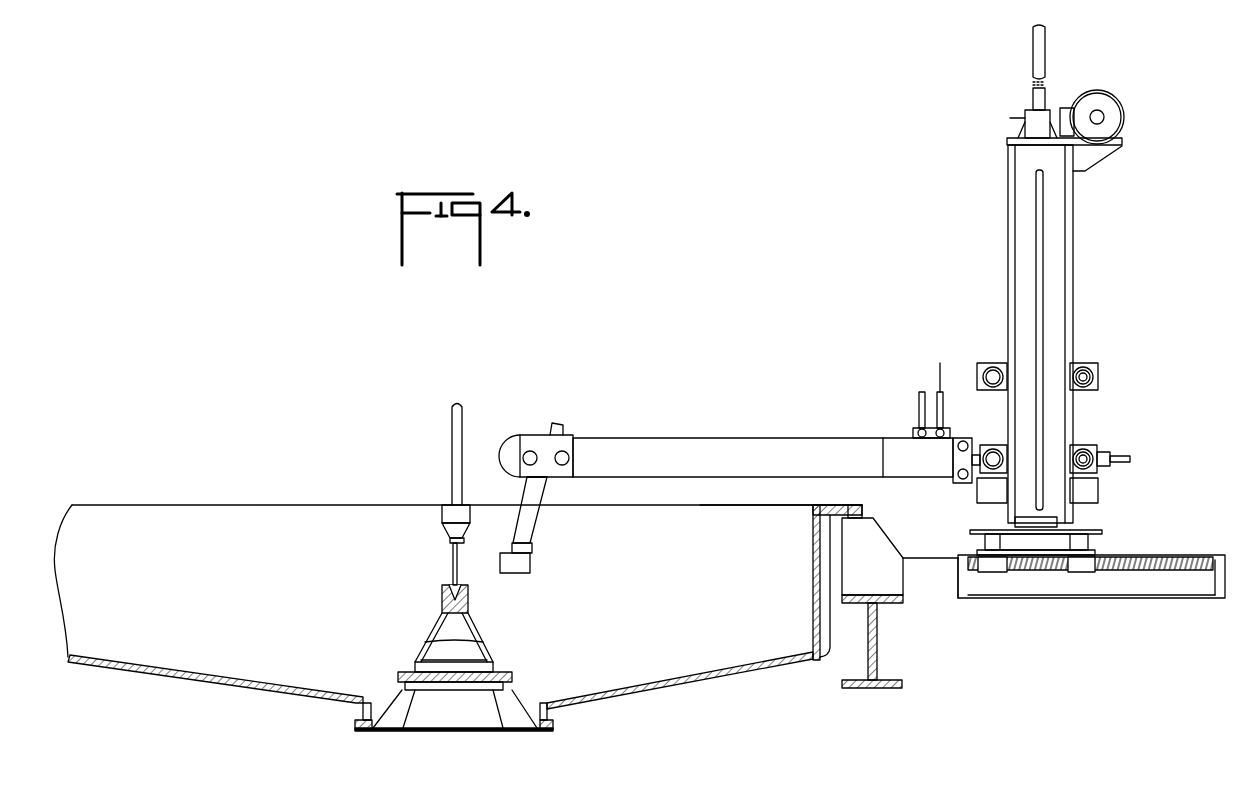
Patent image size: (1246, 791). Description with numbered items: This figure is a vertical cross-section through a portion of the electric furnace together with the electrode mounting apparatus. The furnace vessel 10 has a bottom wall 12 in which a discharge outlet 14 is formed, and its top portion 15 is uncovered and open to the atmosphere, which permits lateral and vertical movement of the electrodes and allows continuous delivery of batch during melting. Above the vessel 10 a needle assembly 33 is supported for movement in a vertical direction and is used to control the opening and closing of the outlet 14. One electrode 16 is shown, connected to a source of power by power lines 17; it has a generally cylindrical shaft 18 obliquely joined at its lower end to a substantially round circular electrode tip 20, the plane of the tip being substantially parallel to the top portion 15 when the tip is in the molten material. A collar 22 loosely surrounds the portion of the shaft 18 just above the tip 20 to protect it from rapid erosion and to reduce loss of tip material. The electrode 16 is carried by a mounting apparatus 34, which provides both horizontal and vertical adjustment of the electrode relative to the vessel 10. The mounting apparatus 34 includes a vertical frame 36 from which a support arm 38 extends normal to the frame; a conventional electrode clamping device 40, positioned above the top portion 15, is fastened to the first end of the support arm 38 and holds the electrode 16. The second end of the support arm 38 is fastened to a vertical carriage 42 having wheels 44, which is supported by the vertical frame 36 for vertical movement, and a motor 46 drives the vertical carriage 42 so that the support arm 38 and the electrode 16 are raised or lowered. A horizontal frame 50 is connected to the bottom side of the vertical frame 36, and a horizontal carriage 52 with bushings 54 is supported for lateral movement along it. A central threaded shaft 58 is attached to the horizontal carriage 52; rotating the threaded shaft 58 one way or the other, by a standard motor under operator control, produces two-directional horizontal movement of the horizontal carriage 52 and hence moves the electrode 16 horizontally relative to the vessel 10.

The vessel 10 is at (178, 683).
The bottom wall 12 is at (662, 689).
The discharge outlet 14 is at (470, 601).
The top portion 15 is at (756, 510).
The electrode 16 is at (553, 497).
The power lines 17 is at (922, 392).
The shaft 18 is at (530, 504).
The electrode tip 20 is at (532, 565).
The collar 22 is at (533, 552).
The needle assembly 33 is at (466, 438).
The mounting apparatus 34 is at (1078, 210).
The vertical frame 36 is at (1073, 262).
The support arm 38 is at (695, 447).
The electrode clamping device 40 is at (565, 445).
The vertical carriage 42 is at (1100, 357).
The wheels 44 is at (1083, 380).
The motor 46 is at (1112, 110).
The horizontal frame 50 is at (985, 545).
The horizontal carriage 52 is at (1098, 553).
The bushings 54 is at (1082, 572).
The threaded shaft 58 is at (1140, 560).